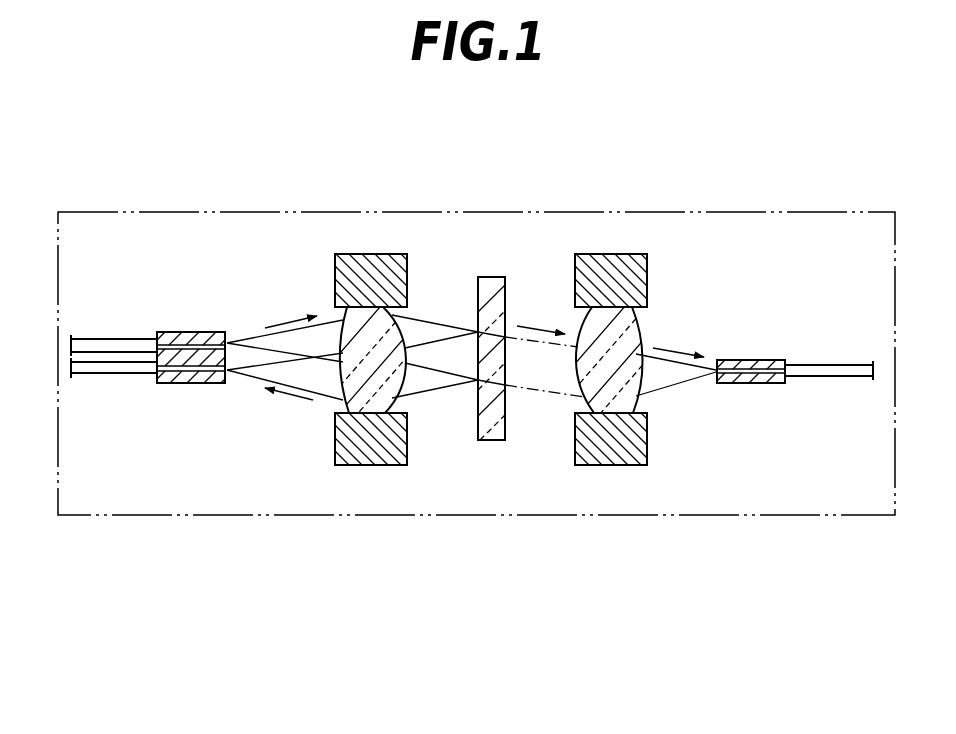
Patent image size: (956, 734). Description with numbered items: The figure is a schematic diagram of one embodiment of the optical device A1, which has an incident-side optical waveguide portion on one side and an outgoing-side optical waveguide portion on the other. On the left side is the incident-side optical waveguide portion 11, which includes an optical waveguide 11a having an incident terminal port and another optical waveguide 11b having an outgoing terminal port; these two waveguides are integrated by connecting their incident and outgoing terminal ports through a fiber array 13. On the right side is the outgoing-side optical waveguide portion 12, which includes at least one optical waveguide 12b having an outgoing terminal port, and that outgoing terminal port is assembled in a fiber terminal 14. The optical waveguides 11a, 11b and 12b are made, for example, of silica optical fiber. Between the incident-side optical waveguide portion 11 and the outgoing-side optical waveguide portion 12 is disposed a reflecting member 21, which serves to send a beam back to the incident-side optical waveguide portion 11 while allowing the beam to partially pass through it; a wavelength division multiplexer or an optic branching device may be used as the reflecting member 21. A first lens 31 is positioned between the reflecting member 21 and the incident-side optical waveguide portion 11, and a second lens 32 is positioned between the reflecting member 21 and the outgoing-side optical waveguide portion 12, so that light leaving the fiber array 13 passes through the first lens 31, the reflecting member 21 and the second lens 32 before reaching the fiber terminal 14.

The optical device A1 is at (512, 211).
The incident-side optical waveguide portion 11 is at (178, 324).
The optical waveguide 11a is at (111, 338).
The optical waveguide 11b is at (123, 374).
The fiber array 13 is at (193, 334).
The first lens 31 is at (345, 319).
The reflecting member 21 is at (478, 306).
The second lens 32 is at (582, 329).
The outgoing-side optical waveguide portion 12 is at (761, 330).
The optical waveguide 12b is at (798, 366).
The fiber terminal 14 is at (738, 359).